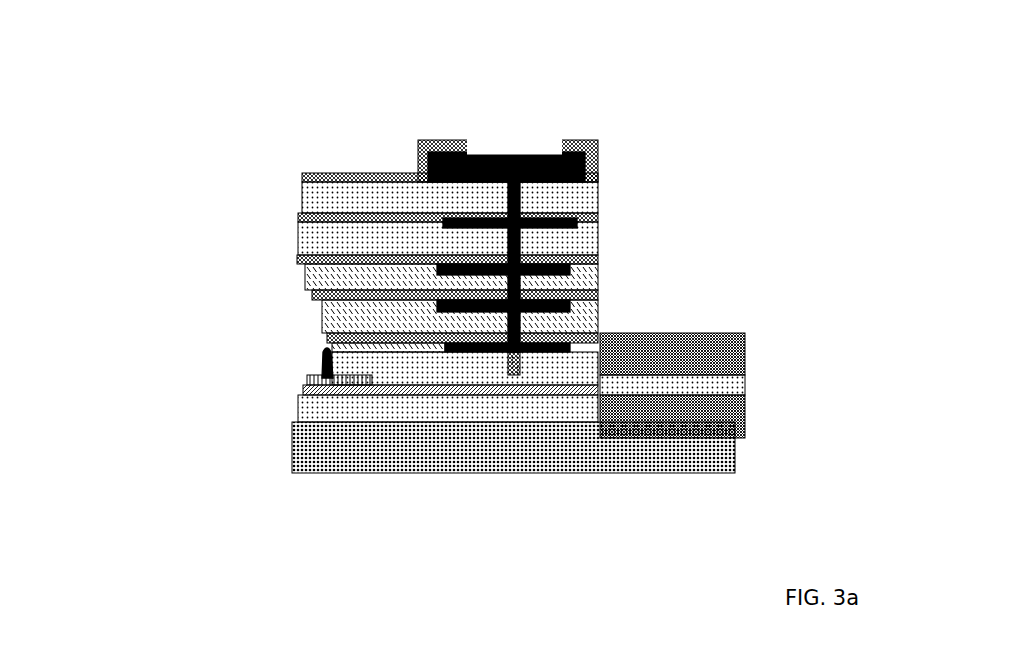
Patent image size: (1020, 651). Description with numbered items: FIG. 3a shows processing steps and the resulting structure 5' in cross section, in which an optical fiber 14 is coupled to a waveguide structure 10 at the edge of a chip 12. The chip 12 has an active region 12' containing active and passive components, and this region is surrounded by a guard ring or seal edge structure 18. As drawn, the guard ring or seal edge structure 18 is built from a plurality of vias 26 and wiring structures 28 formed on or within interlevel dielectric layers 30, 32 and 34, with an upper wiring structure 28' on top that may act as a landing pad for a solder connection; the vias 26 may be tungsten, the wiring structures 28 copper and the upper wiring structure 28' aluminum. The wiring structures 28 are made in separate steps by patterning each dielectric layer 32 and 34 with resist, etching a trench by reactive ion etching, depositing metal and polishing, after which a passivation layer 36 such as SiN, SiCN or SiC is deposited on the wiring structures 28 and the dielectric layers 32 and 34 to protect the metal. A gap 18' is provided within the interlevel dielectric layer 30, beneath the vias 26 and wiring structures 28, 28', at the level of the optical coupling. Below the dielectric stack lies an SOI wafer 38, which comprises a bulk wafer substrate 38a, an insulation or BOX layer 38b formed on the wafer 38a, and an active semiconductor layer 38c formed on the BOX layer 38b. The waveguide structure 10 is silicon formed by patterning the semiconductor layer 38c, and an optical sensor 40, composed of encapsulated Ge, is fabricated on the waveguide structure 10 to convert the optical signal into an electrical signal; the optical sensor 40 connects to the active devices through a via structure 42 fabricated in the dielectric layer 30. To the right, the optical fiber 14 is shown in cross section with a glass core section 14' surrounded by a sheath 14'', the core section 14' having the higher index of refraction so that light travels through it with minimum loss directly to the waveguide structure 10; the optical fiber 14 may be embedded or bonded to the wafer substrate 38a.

The structure 5' is at (753, 83).
The waveguide structure 10 is at (478, 395).
The chip 12 is at (91, 41).
The active region 12' is at (88, 294).
The optical fiber 14 is at (672, 340).
The core section 14' is at (704, 436).
The sheath 14'' is at (707, 347).
The guard ring or seal edge structure 18 is at (619, 251).
The gap 18' is at (434, 445).
The vias 26 is at (477, 290).
The wiring structures 28 is at (553, 371).
The upper wiring structure 28' is at (508, 141).
The interlevel dielectric layer 30 is at (383, 363).
The interlevel dielectric layer 32 is at (418, 306).
The interlevel dielectric layer 34 is at (598, 228).
The passivation layer 36 is at (330, 335).
The SOI wafer 38 is at (255, 397).
The wafer 38a is at (290, 457).
The insulation layer 38b is at (298, 408).
The active semiconductor layer 38c is at (547, 398).
The optical sensor 40 is at (332, 392).
The via structure 42 is at (323, 360).